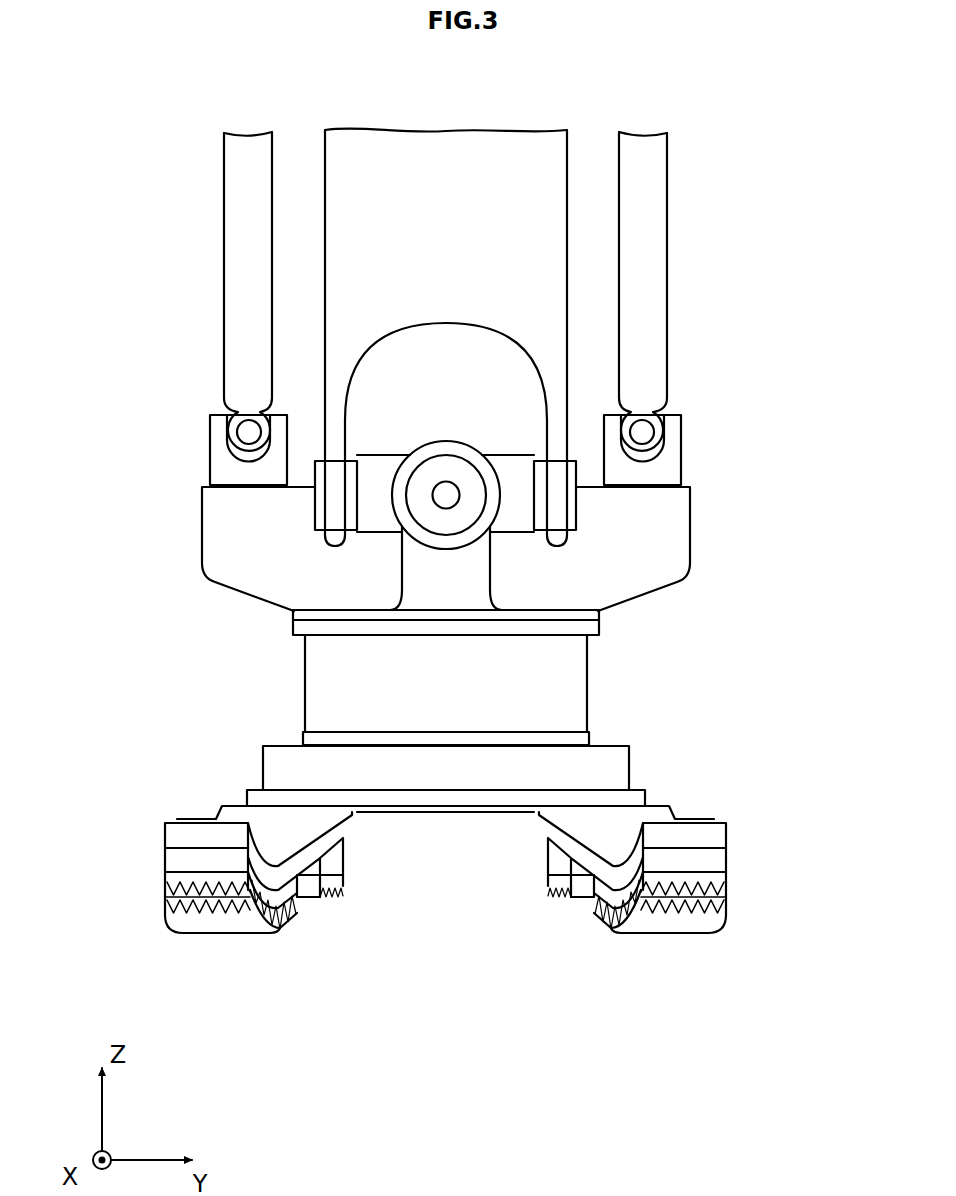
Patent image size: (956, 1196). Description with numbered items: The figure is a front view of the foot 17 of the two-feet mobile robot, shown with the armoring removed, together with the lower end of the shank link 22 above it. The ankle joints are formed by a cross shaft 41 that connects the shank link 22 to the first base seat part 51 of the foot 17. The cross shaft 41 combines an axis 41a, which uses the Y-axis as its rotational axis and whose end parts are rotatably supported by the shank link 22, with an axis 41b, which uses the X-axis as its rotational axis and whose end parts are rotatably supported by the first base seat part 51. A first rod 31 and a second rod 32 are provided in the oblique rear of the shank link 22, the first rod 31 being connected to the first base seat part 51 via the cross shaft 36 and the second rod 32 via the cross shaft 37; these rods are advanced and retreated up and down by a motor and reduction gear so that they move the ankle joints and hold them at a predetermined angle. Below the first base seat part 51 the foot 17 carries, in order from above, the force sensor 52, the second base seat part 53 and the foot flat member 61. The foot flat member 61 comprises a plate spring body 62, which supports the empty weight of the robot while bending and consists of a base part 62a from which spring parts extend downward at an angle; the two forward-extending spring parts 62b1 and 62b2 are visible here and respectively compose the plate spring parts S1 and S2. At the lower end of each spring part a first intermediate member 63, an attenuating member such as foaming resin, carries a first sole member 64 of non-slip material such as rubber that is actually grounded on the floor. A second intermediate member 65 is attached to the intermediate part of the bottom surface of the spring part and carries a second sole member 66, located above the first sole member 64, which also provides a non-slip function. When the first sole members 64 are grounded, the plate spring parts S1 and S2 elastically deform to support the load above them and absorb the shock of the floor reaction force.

The foot 17 is at (122, 599).
The shank link 22 is at (388, 142).
The first rod 31 is at (235, 145).
The second rod 32 is at (661, 145).
The cross shaft 36 is at (230, 415).
The cross shaft 37 is at (662, 415).
The cross shaft 41 is at (93, 438).
The axis 41a is at (313, 468).
The axis 41b is at (415, 500).
The first base seat part 51 is at (217, 532).
The force sensor 52 is at (320, 660).
The second base seat part 53 is at (300, 753).
The foot flat member 61 is at (117, 776).
The plate spring body 62 is at (647, 818).
The base part 62a is at (440, 815).
The spring part 62b1 is at (175, 835).
The spring part 62b2 is at (715, 833).
The first intermediate member 63 is at (175, 863).
The first sole member 64 is at (175, 882).
The second intermediate member 65 is at (335, 850).
The second sole member 66 is at (332, 887).
The plate spring part S1 is at (180, 795).
The plate spring part S2 is at (711, 795).